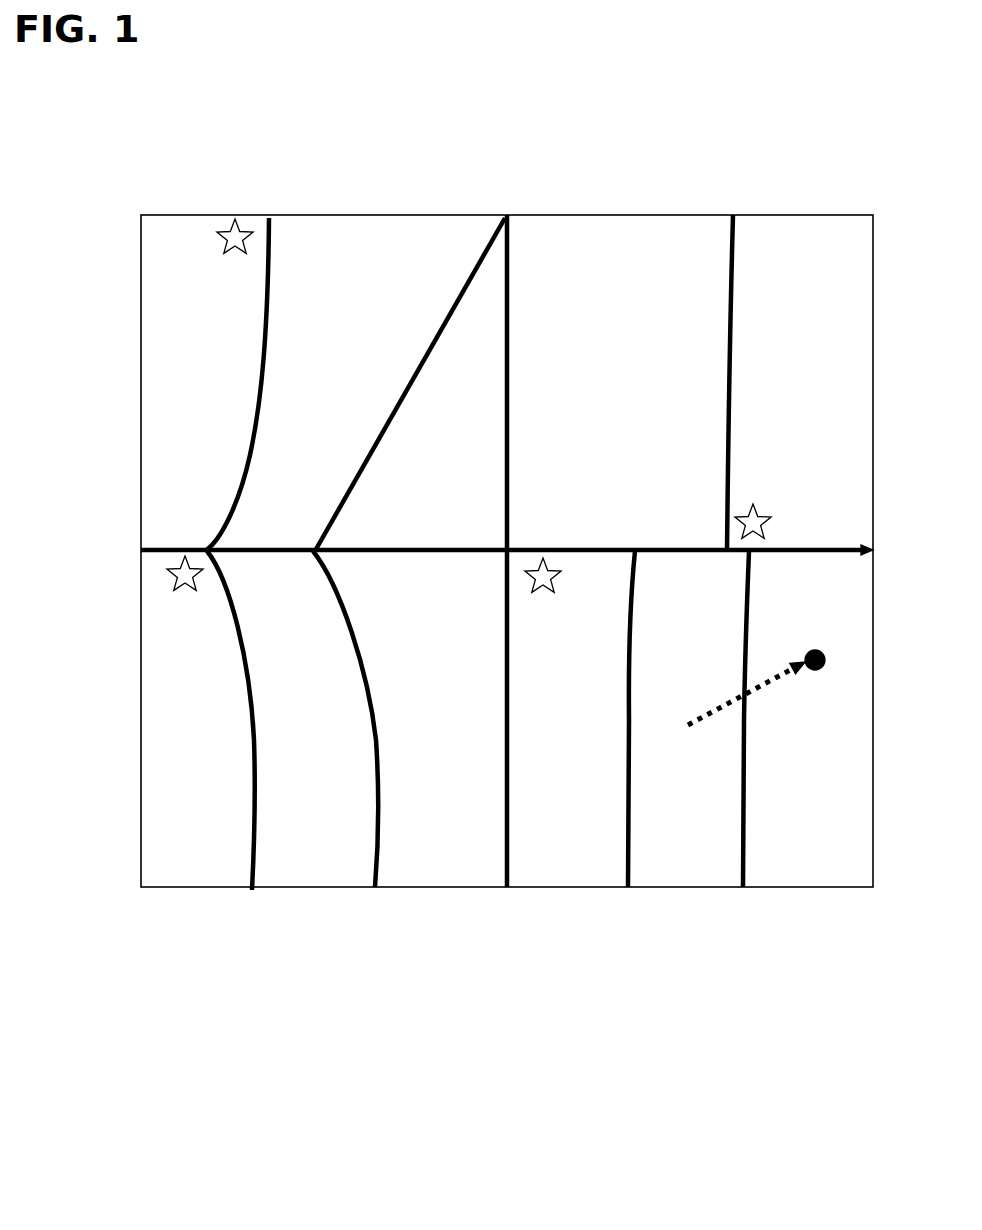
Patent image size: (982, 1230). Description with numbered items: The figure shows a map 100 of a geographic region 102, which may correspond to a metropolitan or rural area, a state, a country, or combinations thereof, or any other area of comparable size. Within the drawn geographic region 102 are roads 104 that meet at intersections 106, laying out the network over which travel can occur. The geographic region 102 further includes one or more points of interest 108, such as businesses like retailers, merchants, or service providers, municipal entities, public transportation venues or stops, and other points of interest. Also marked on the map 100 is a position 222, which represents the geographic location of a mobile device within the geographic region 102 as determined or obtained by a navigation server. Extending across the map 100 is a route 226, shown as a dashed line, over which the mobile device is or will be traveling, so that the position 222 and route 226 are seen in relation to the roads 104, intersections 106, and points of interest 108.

The map 100 is at (431, 921).
The geographic region 102 is at (627, 253).
The roads 104 is at (679, 351).
The intersections 106 is at (489, 567).
The points of interest 108 is at (221, 265).
The position 222 is at (810, 686).
The route 226 is at (687, 754).